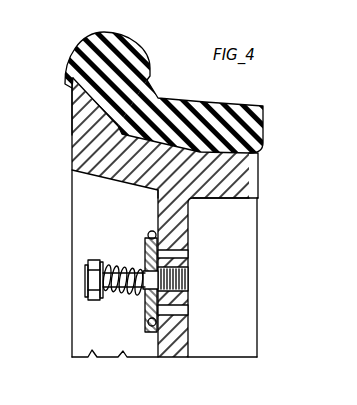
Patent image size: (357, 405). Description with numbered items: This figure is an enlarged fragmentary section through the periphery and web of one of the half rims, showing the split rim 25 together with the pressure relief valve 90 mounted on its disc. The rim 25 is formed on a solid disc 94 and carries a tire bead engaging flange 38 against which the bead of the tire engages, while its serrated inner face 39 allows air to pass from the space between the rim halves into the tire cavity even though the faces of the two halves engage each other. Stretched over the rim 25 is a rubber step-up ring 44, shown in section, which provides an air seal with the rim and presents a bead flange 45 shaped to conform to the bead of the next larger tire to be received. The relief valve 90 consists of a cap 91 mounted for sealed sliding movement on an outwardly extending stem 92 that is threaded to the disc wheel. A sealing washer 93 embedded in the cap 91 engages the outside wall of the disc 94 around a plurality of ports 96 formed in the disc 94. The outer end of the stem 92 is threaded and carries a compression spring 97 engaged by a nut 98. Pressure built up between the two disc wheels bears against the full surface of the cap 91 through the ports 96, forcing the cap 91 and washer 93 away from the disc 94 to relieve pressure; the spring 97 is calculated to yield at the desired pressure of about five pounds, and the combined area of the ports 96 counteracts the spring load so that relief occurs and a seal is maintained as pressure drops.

The split rim 25 is at (140, 180).
The tire bead engaging flange 38 is at (73, 97).
The serrated inner face 39 is at (258, 160).
The step-up ring 44 is at (212, 82).
The bead flange 45 is at (125, 52).
The relief valve 90 is at (86, 283).
The cap 91 is at (147, 246).
The stem 92 is at (85, 281).
The sealing washer 93 is at (152, 231).
The disc 94 is at (203, 273).
The ports 96 is at (187, 253).
The compression spring 97 is at (124, 297).
The nut 98 is at (100, 293).